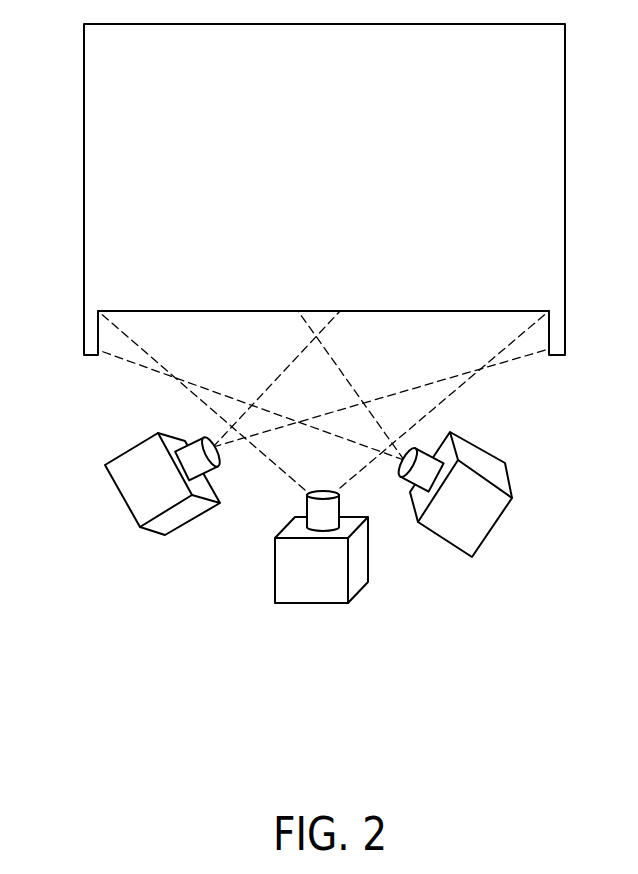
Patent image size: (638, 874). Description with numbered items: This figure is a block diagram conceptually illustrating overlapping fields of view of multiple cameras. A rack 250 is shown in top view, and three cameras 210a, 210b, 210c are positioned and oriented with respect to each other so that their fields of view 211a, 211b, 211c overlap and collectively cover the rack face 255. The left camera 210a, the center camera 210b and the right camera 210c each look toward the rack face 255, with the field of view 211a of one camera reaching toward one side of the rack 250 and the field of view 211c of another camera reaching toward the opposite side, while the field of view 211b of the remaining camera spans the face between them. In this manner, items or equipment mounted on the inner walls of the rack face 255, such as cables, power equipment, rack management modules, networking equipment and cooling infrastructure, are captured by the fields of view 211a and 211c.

The rack 250 is at (324, 189).
The rack face 255 is at (323, 299).
The camera 210a is at (124, 488).
The camera 210b is at (318, 578).
The camera 210c is at (491, 497).
The field of view 211a is at (521, 356).
The field of view 211b is at (270, 446).
The field of view 211c is at (123, 352).